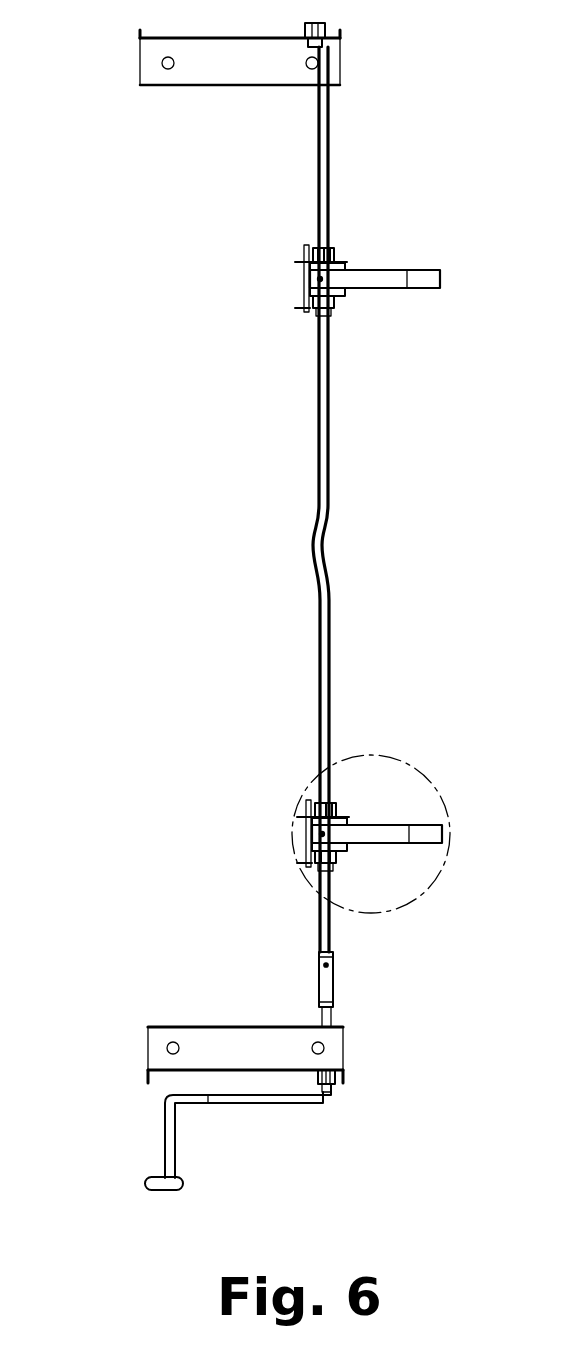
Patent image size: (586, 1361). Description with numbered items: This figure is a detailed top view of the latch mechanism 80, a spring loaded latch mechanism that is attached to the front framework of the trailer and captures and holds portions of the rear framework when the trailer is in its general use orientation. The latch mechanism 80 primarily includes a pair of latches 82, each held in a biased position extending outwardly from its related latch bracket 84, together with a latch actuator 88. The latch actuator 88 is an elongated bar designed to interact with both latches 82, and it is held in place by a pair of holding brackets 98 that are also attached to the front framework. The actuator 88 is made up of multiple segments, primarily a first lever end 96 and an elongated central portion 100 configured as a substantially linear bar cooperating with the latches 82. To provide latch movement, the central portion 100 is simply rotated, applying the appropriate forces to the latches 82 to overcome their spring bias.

The latch mechanism 80 is at (292, 553).
The latch 82 is at (425, 275).
The latch bracket 84 is at (343, 857).
The latch actuator 88 is at (163, 1142).
The first lever end 96 is at (277, 1128).
The holding bracket 98 is at (198, 88).
The elongated central portion 100 is at (328, 673).